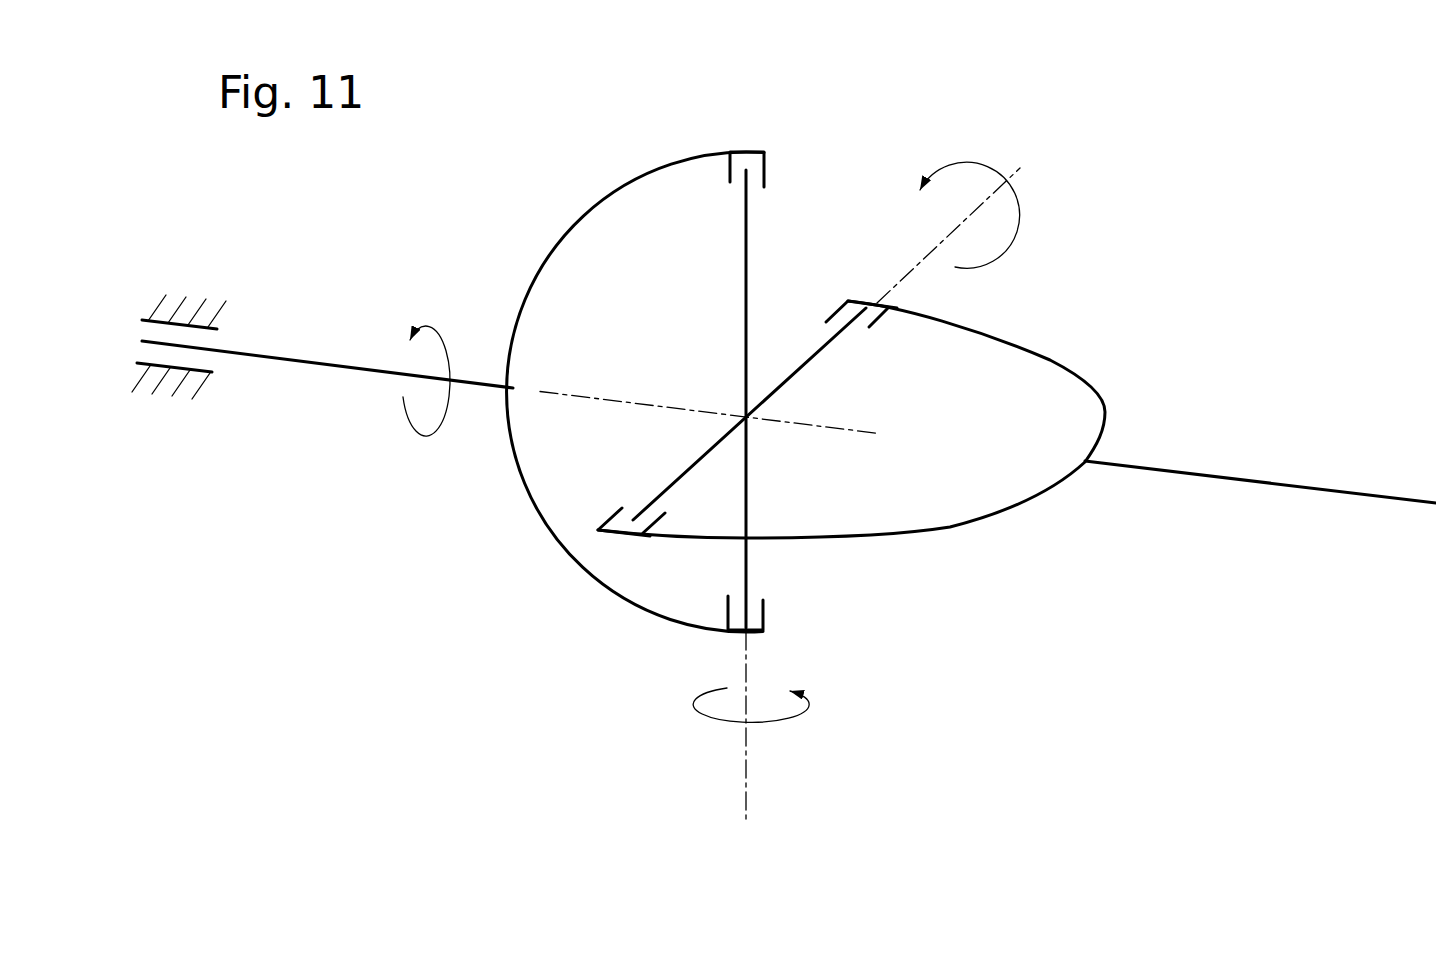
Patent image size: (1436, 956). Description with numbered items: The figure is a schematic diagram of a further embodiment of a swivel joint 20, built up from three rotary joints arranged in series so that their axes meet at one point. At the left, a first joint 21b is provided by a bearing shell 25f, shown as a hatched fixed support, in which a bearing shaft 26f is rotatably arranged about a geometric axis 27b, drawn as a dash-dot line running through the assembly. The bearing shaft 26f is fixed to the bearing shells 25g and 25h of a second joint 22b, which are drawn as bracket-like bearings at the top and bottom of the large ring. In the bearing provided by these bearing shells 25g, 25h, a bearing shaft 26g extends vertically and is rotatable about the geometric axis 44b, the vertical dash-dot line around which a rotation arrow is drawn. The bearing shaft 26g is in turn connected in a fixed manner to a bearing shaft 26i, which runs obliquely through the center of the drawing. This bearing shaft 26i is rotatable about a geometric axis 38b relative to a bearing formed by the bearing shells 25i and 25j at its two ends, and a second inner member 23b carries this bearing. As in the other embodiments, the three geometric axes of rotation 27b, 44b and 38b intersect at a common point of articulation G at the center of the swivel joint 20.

The swivel joint 20 is at (1080, 132).
The first joint 21b is at (202, 268).
The second joint 22b is at (756, 132).
The inner gimbal 23b is at (838, 290).
The bearing shell 25f is at (200, 372).
The bearing shell 25g is at (722, 157).
The bearing shell 25h is at (765, 617).
The bearing shell 25i is at (877, 318).
The bearing shell 25j is at (598, 528).
The bearing shaft 26f is at (248, 352).
The bearing shaft 26g is at (746, 218).
The bearing shaft 26i is at (818, 357).
The geometric axis 27b is at (582, 394).
The geometric axis 38b is at (970, 218).
The geometric axis 44b is at (746, 795).
The point of articulation G is at (752, 421).